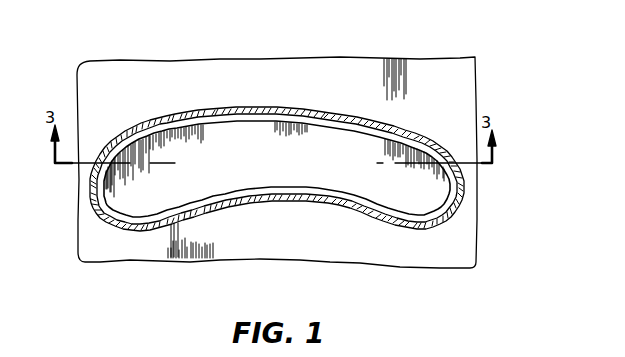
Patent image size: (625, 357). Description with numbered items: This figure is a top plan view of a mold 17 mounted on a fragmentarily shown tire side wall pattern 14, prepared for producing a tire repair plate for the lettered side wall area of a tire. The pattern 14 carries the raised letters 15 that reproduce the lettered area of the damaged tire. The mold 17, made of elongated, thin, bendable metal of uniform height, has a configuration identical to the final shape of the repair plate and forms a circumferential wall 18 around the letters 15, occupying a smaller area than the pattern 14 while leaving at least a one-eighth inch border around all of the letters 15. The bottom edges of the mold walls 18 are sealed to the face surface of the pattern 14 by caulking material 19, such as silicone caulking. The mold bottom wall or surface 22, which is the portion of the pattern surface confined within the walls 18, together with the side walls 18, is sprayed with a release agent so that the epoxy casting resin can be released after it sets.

The side wall pattern 14 is at (455, 97).
The raised letters 15 is at (232, 146).
The mold 17 is at (393, 128).
The circumferential wall 18 is at (433, 228).
The caulking material 19 is at (148, 230).
The mold bottom wall or surface 22 is at (160, 203).